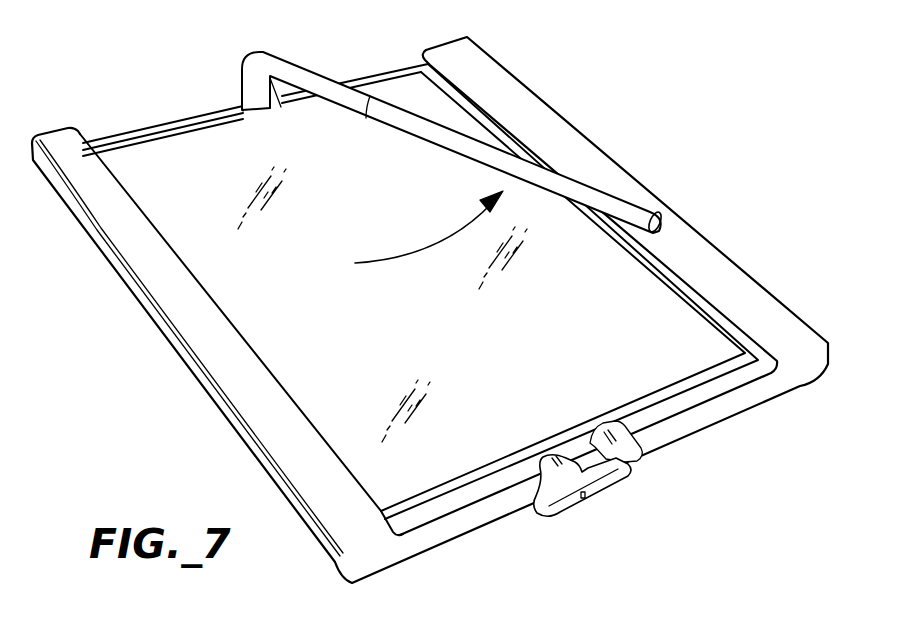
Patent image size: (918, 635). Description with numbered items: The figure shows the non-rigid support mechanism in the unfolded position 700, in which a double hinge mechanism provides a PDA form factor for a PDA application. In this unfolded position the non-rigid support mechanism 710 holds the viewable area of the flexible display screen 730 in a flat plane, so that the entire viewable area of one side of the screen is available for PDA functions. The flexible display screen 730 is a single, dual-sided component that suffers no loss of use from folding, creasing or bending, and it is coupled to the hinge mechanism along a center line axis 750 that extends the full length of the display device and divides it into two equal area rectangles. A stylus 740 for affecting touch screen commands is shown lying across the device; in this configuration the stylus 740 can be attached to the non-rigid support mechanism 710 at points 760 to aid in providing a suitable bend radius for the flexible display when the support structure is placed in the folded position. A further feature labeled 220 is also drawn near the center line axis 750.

The unfolded position 700 is at (722, 127).
The non-rigid support mechanism 710 is at (486, 530).
The flexible display screen 730 is at (620, 318).
The stylus 740 is at (297, 63).
The center line axis 750 is at (610, 488).
The attachment points 760 is at (250, 95).
The tab slot 220 is at (583, 498).